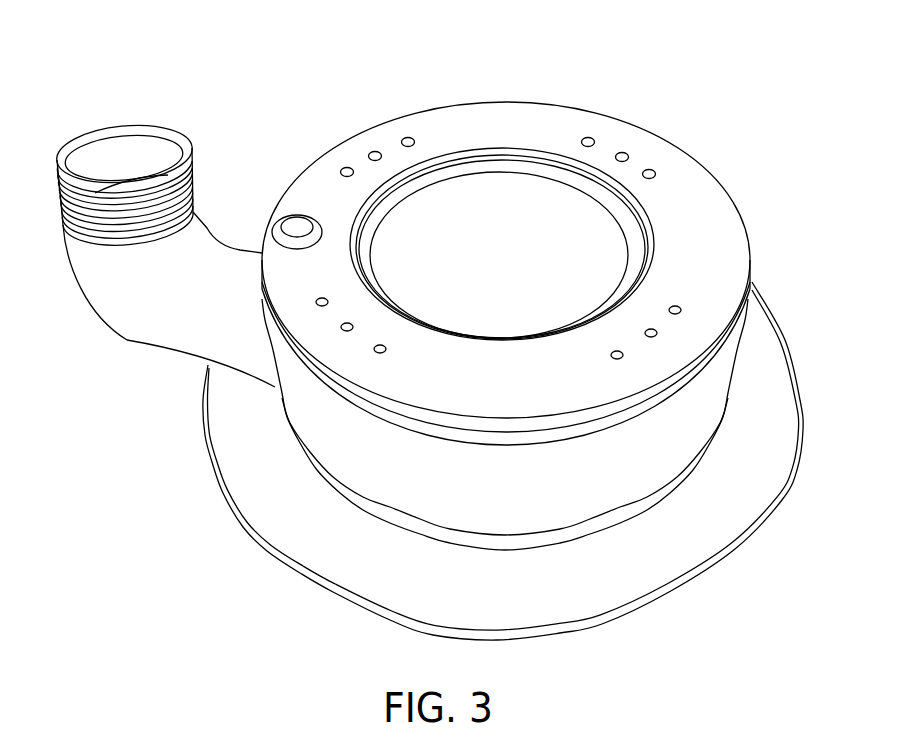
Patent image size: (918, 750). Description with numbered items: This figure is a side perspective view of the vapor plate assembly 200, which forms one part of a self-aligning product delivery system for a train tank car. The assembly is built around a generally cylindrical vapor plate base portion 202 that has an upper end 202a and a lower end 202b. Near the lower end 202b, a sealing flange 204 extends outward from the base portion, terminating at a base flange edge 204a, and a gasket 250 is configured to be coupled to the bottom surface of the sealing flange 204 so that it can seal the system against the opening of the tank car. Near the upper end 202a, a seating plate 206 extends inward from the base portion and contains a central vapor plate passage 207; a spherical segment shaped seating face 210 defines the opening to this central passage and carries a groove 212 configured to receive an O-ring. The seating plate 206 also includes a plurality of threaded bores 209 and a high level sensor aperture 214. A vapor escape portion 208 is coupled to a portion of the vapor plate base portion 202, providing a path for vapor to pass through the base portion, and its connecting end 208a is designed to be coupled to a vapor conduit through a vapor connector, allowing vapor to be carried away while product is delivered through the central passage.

The vapor plate assembly 200 is at (640, 60).
The vapor plate base portion 202 is at (323, 422).
The upper end 202a is at (463, 438).
The lower end 202b is at (612, 525).
The sealing flange 204 is at (762, 463).
The base flange edge 204a is at (723, 537).
The seating plate 206 is at (718, 288).
The central vapor plate passage 207 is at (495, 203).
The vapor escape portion 208 is at (152, 320).
The connecting end 208a is at (187, 172).
The threaded bores 209 is at (328, 300).
The seating face 210 is at (625, 200).
The groove 212 is at (645, 248).
The high level sensor aperture 214 is at (298, 227).
The gasket 250 is at (243, 527).